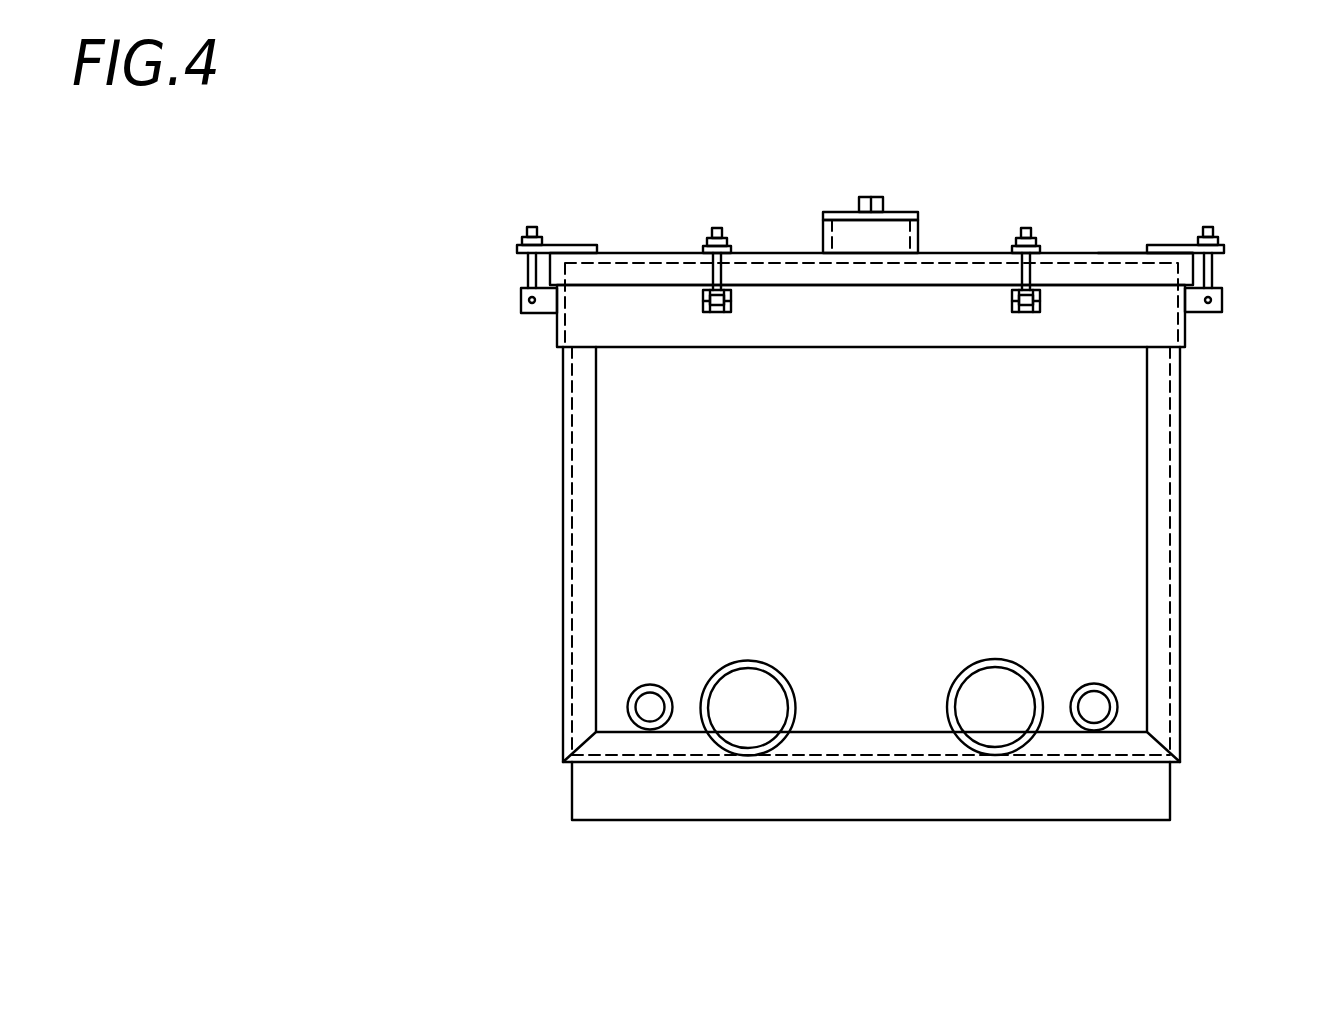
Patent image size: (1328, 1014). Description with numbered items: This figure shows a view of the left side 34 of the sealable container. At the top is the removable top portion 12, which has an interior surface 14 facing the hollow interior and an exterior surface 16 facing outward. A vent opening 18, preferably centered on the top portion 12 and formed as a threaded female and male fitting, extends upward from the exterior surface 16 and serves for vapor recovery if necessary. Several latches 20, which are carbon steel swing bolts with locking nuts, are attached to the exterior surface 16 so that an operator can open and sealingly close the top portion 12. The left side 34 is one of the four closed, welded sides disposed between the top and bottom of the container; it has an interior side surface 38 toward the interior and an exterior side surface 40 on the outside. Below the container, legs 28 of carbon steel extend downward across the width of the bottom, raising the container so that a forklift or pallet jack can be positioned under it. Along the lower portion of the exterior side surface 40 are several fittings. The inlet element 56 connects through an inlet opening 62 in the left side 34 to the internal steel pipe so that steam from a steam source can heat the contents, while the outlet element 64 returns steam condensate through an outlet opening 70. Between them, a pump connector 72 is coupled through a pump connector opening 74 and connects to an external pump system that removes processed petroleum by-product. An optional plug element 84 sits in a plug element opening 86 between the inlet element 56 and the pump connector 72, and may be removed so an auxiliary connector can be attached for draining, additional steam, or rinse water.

The top portion 12 is at (978, 252).
The interior surface 14 is at (1147, 287).
The exterior surface 16 is at (1098, 252).
The vent opening 18 is at (838, 235).
The latches 20 is at (703, 247).
The legs 28 is at (1170, 792).
The left side 34 is at (1100, 456).
The interior side surface 38 is at (668, 522).
The exterior side surface 40 is at (1010, 523).
The inlet element 56 is at (643, 705).
The inlet opening 62 is at (668, 733).
The outlet element 64 is at (1093, 715).
The outlet opening 70 is at (1100, 686).
The pump connector 72 is at (995, 733).
The pump connector opening 74 is at (953, 738).
The plug element 84 is at (733, 727).
The plug element opening 86 is at (790, 733).